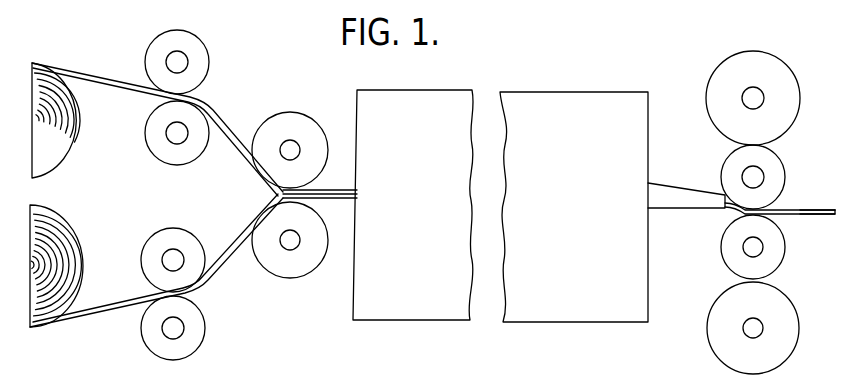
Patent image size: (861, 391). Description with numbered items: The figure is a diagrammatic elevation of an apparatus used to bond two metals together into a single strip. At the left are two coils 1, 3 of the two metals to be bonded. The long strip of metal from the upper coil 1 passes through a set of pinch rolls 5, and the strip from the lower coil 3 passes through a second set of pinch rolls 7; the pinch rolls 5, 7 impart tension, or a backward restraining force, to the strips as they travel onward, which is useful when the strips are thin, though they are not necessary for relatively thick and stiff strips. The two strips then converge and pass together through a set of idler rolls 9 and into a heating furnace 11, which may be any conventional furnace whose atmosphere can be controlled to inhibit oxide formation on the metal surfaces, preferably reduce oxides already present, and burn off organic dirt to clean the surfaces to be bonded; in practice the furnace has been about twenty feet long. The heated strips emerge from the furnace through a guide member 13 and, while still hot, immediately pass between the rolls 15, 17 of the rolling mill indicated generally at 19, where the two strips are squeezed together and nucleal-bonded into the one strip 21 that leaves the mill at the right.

The coil 1 is at (56, 157).
The coil 3 is at (68, 248).
The pinch rolls 5 is at (262, 62).
The pinch rolls 7 is at (133, 340).
The idler rolls 9 is at (283, 279).
The heating furnace 11 is at (540, 323).
The guide member 13 is at (675, 222).
The roll 15 is at (776, 176).
The roll 17 is at (775, 257).
The rolling mill 19 is at (705, 356).
The strip 21 is at (798, 217).